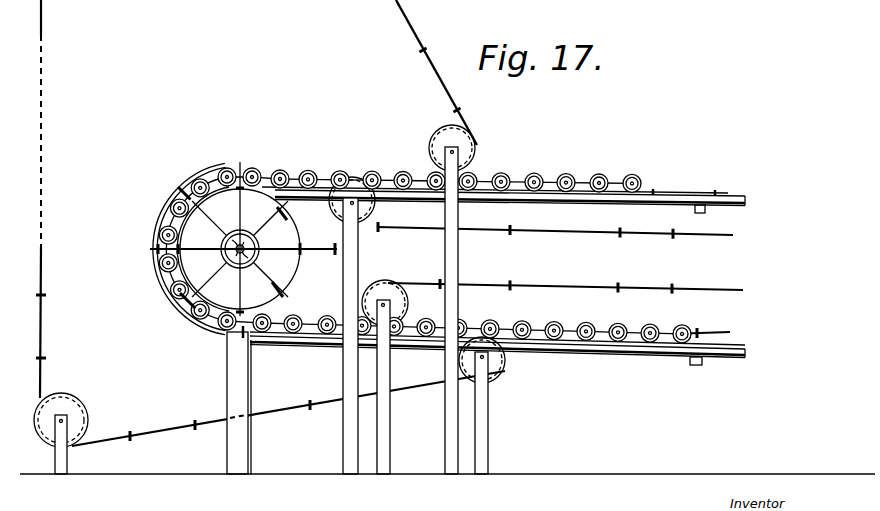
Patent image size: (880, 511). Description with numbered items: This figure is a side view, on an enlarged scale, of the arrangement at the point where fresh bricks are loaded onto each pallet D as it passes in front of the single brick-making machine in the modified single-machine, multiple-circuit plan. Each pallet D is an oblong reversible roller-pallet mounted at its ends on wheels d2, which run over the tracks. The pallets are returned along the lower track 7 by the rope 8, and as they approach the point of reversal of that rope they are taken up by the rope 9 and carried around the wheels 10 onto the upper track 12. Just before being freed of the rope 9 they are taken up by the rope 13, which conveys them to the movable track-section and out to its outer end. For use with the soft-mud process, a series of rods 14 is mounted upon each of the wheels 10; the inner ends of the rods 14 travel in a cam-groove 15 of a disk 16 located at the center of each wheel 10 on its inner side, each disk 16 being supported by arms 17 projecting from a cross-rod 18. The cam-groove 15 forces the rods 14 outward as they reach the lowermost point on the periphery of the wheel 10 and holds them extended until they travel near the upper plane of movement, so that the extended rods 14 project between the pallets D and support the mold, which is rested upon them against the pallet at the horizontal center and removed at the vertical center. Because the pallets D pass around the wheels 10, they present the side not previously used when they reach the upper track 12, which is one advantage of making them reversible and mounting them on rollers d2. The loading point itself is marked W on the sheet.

The lower track 7 is at (502, 403).
The rope 8 is at (707, 323).
The rope 9 is at (436, 72).
The wheels 10 is at (234, 284).
The upper track 12 is at (514, 209).
The rope 13 is at (651, 243).
The rods 14 is at (202, 211).
The cam-groove 15 is at (268, 218).
The disk 16 is at (270, 262).
The arms 17 is at (323, 252).
The cross-rod 18 is at (337, 262).
The pallet D is at (239, 236).
The wheels d2 is at (283, 168).
The wheel axle W is at (227, 268).